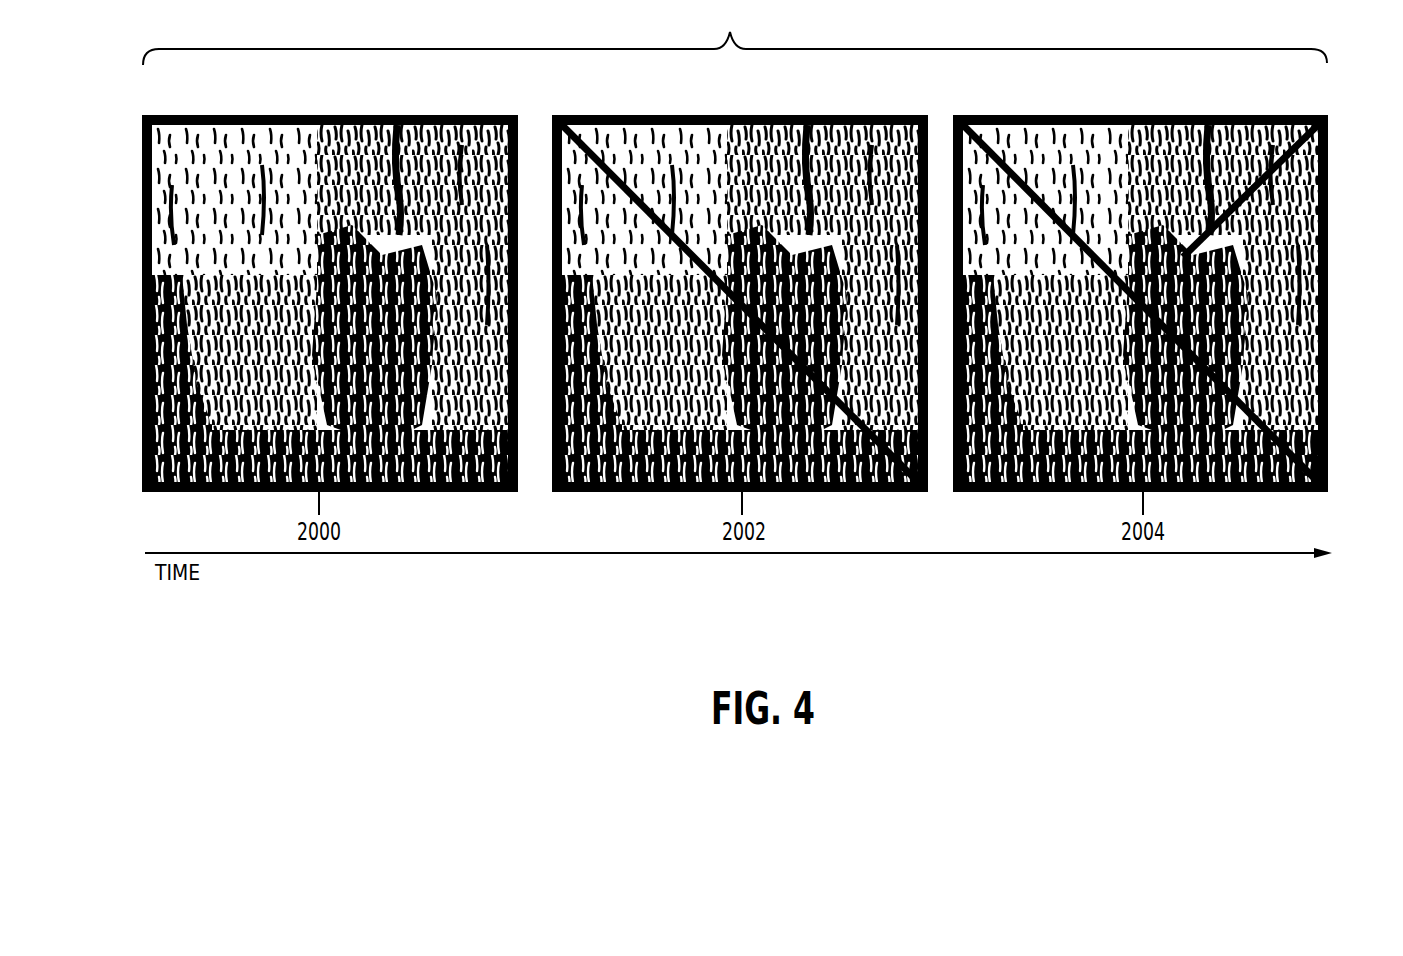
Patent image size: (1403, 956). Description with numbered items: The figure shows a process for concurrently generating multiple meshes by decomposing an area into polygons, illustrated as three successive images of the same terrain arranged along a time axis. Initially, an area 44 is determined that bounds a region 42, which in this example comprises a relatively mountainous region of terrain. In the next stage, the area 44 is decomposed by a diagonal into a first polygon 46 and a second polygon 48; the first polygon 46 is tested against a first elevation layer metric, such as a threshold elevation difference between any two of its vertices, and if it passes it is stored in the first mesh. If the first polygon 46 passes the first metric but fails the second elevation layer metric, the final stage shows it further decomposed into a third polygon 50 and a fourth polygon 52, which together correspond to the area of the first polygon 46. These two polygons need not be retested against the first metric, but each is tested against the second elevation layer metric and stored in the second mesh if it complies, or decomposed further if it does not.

The region 42 is at (310, 143).
The area 44 is at (142, 160).
The first polygon 46 is at (712, 143).
The second polygon 48 is at (632, 492).
The third polygon 50 is at (1125, 143).
The fourth polygon 52 is at (1302, 192).